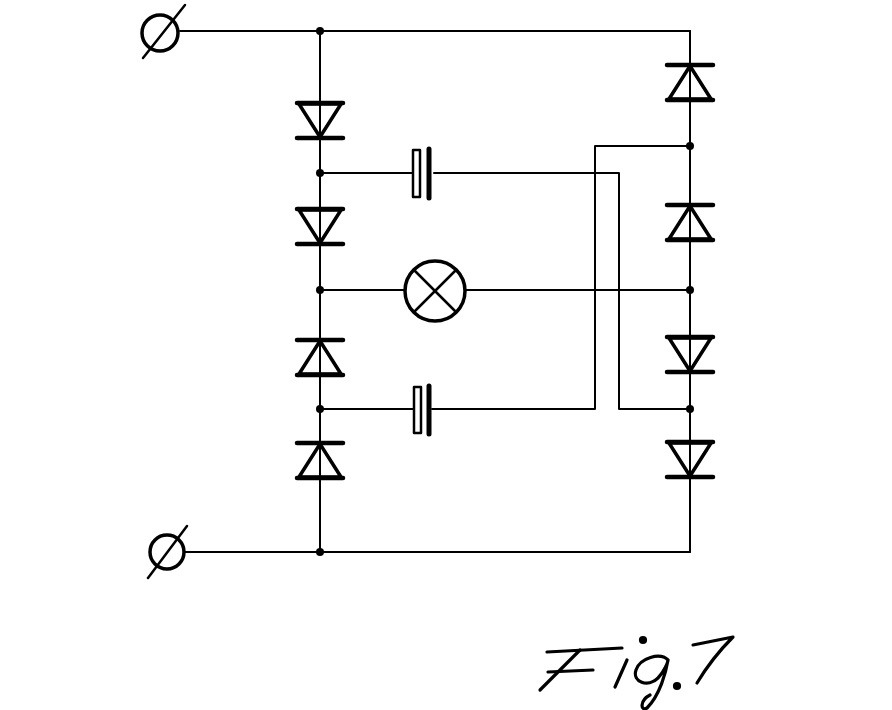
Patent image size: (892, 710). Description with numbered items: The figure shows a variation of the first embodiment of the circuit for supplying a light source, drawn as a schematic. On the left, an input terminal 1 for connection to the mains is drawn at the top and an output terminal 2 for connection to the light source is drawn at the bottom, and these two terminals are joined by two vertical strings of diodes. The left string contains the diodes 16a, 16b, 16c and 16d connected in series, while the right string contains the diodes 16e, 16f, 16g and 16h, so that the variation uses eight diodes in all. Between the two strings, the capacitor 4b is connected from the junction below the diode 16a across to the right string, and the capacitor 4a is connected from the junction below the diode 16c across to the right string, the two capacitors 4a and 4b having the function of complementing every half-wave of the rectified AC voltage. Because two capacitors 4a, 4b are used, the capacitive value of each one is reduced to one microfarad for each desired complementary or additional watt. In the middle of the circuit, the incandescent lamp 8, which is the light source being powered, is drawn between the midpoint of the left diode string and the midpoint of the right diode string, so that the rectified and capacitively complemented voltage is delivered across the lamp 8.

The input terminal 1 is at (140, 40).
The output terminal 2 is at (150, 545).
The capacitor 4a is at (430, 478).
The capacitor 4b is at (465, 110).
The incandescent lamp 8 is at (490, 255).
The diode 16a is at (298, 113).
The diode 16b is at (300, 222).
The diode 16c is at (300, 357).
The diode 16d is at (300, 460).
The diode 16e is at (742, 70).
The diode 16f is at (742, 218).
The diode 16g is at (735, 340).
The diode 16h is at (745, 465).